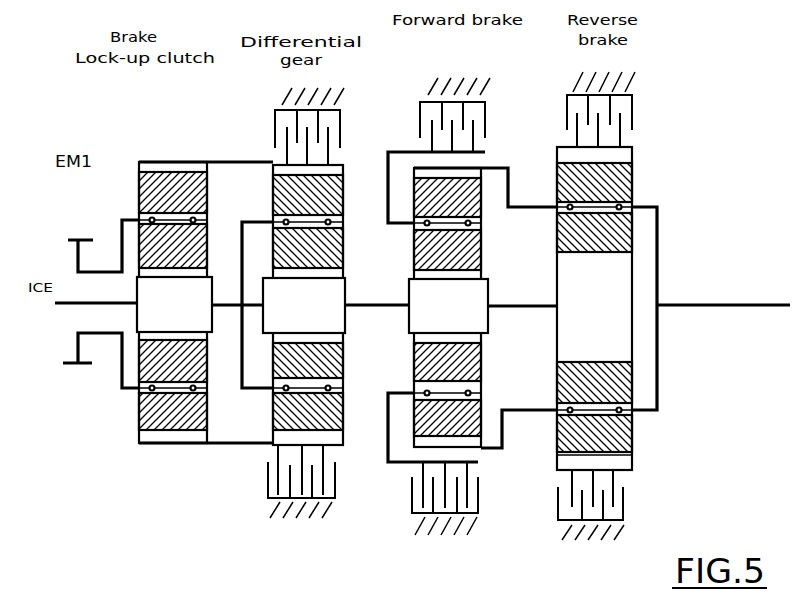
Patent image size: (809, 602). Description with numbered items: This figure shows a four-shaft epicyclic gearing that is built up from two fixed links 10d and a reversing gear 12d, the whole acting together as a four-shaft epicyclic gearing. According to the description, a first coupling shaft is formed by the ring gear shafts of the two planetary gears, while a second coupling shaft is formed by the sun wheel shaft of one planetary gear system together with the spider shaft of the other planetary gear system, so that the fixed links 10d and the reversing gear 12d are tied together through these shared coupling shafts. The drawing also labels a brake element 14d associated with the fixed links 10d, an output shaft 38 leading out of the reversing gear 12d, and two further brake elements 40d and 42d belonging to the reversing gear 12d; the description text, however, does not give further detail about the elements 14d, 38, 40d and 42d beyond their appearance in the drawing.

The fixed links 10d is at (225, 328).
The reversing gear 12d is at (555, 332).
The brake / lock-up clutch of differential gear 14d is at (337, 520).
The output shaft 38 is at (696, 303).
The forward brake 40d is at (412, 490).
The reverse brake 42d is at (625, 500).